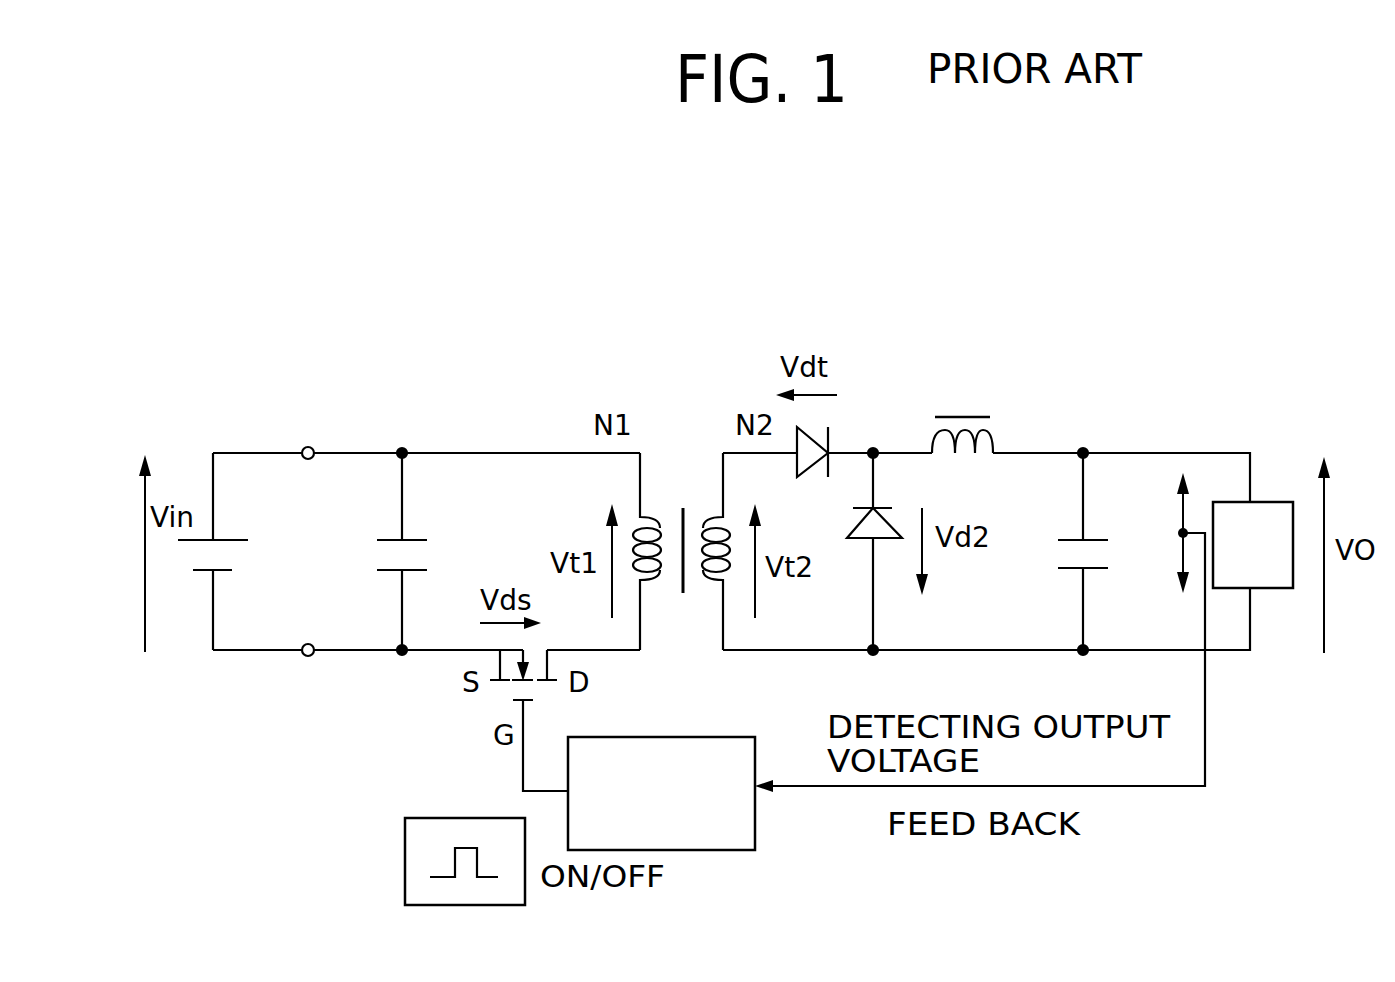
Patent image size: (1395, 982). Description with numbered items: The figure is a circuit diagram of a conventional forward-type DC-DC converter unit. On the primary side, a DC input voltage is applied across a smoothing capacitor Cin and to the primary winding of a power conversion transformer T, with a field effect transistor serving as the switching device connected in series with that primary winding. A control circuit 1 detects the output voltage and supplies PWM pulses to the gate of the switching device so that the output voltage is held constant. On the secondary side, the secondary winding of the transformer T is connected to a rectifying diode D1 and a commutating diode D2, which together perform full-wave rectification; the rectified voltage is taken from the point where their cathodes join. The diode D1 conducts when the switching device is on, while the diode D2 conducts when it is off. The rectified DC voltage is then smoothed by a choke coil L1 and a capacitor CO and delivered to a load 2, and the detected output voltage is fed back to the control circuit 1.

The control circuit 1 is at (680, 737).
The load 2 is at (1272, 502).
The smoothing capacitor Cin is at (367, 551).
The power conversion transformer T is at (681, 516).
The rectifying diode D1 is at (837, 443).
The commutating diode D2 is at (887, 551).
The choke coil L1 is at (962, 458).
The capacitor CO is at (1071, 551).